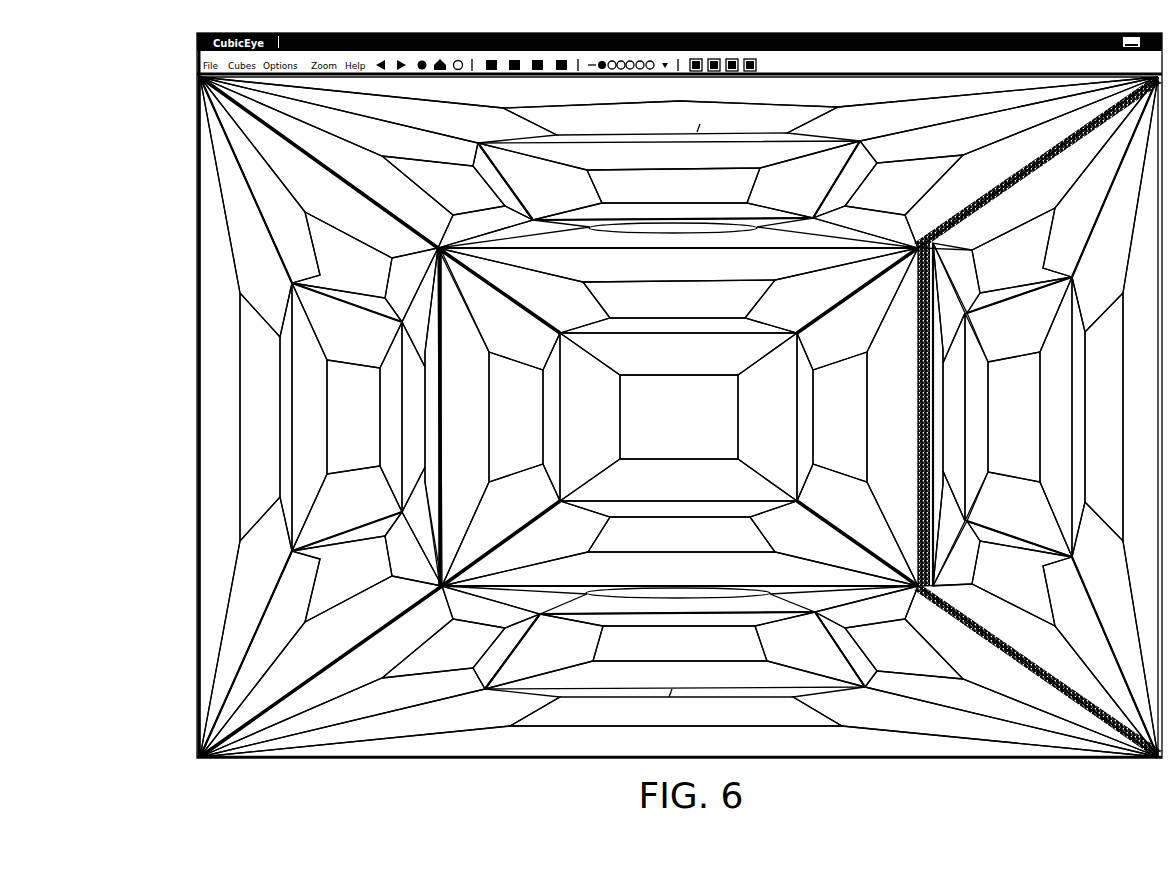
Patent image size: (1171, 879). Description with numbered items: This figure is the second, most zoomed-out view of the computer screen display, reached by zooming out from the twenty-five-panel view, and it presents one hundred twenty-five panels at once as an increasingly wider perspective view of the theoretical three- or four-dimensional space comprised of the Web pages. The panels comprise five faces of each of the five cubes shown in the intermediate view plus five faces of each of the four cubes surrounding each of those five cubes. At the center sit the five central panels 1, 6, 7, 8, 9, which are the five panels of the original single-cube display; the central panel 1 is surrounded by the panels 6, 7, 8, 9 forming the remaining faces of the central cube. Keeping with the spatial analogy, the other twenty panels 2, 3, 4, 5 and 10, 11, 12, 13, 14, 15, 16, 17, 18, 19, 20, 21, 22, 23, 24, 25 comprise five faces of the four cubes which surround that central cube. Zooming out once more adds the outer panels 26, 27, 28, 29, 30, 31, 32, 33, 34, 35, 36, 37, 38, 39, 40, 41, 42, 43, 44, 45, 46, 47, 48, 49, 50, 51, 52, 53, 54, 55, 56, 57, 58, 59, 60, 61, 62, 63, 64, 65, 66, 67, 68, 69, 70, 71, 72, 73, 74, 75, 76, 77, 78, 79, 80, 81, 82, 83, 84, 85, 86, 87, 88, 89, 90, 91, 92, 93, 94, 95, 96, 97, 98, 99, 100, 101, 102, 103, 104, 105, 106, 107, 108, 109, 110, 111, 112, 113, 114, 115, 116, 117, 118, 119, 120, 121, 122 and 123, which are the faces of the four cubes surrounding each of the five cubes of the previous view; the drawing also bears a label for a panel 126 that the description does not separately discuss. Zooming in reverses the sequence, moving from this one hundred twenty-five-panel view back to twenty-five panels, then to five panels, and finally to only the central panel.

The central panel 1 is at (679, 417).
The panel 2 is at (673, 185).
The panel 3 is at (680, 643).
The panel 4 is at (353, 417).
The panel 5 is at (1014, 417).
The central panel 6 is at (679, 299).
The central panel 7 is at (681, 534).
The central panel 8 is at (516, 417).
The central panel 9 is at (840, 417).
The panel 10 is at (670, 118).
The panel 11 is at (673, 230).
The panel 12 is at (443, 185).
The panel 13 is at (904, 185).
The panel 14 is at (678, 597).
The panel 15 is at (676, 711).
The panel 16 is at (443, 648).
The panel 17 is at (904, 649).
The panel 18 is at (342, 255).
The panel 19 is at (342, 579).
The panel 20 is at (260, 417).
The panel 21 is at (413, 417).
The panel 22 is at (1022, 250).
The panel 23 is at (1022, 583).
The panel 24 is at (1014, 417).
The panel 25 is at (1104, 417).
The panel 26 is at (678, 354).
The panel 27 is at (678, 480).
The panel 28 is at (590, 417).
The panel 29 is at (767, 417).
The panel 30 is at (669, 155).
The panel 31 is at (673, 212).
The panel 32 is at (540, 181).
The panel 33 is at (803, 179).
The panel 34 is at (677, 618).
The panel 35 is at (675, 675).
The panel 36 is at (544, 651).
The panel 37 is at (810, 649).
The panel 38 is at (347, 325).
The panel 39 is at (347, 508).
The panel 40 is at (309, 417).
The panel 41 is at (391, 417).
The panel 42 is at (1019, 319).
The panel 43 is at (1019, 514).
The panel 44 is at (976, 417).
The panel 45 is at (1056, 417).
The panel 46 is at (678, 265).
The panel 47 is at (678, 325).
The panel 48 is at (524, 290).
The panel 49 is at (831, 290).
The panel 50 is at (678, 509).
The panel 51 is at (680, 569).
The panel 52 is at (526, 543).
The panel 53 is at (834, 543).
The panel 54 is at (499, 309).
The panel 55 is at (501, 525).
The panel 56 is at (464, 417).
The panel 57 is at (551, 417).
The panel 58 is at (857, 309).
The panel 59 is at (857, 525).
The panel 60 is at (805, 417).
The panel 61 is at (892, 417).
The panel 62 is at (679, 92).
The panel 63 is at (709, 122).
The panel 64 is at (378, 110).
The panel 65 is at (972, 109).
The panel 66 is at (650, 230).
The panel 67 is at (695, 230).
The panel 68 is at (514, 234).
The panel 69 is at (837, 233).
The panel 70 is at (339, 121).
The panel 71 is at (485, 227).
The panel 72 is at (326, 162).
The panel 73 is at (503, 181).
The panel 74 is at (1009, 120).
The panel 75 is at (865, 227).
The panel 76 is at (845, 179).
The panel 77 is at (1031, 162).
The panel 78 is at (703, 600).
The panel 79 is at (644, 601).
The panel 80 is at (514, 600).
The panel 81 is at (844, 599).
The panel 82 is at (652, 701).
The panel 83 is at (679, 741).
The panel 84 is at (380, 723).
The panel 85 is at (975, 722).
The panel 86 is at (491, 607).
The panel 87 is at (342, 712).
The panel 88 is at (326, 671).
The panel 89 is at (506, 651).
The panel 90 is at (866, 607).
The panel 91 is at (1011, 714).
The panel 92 is at (846, 649).
The panel 93 is at (1031, 671).
The panel 94 is at (319, 167).
The panel 95 is at (347, 302).
The panel 96 is at (260, 180).
The panel 97 is at (411, 285).
The panel 98 is at (347, 531).
The panel 99 is at (321, 666).
The panel 100 is at (260, 654).
The panel 101 is at (413, 549).
The panel 102 is at (246, 207).
The panel 103 is at (246, 627).
The panel 104 is at (220, 417).
The panel 105 is at (286, 417).
The panel 106 is at (420, 307).
The panel 107 is at (422, 526).
The panel 108 is at (392, 378).
The panel 109 is at (432, 417).
The panel 110 is at (1038, 163).
The panel 111 is at (1019, 295).
The panel 112 is at (956, 278).
The panel 113 is at (1100, 177).
The panel 114 is at (1019, 539).
The panel 115 is at (1038, 670).
The panel 116 is at (955, 528).
The panel 117 is at (1100, 657).
The panel 118 is at (949, 303).
The panel 119 is at (956, 542).
The panel 120 is at (938, 414).
The panel 121 is at (978, 376).
The panel 122 is at (1115, 204).
The panel 123 is at (1115, 629).
The right edge strip 126 is at (1140, 417).